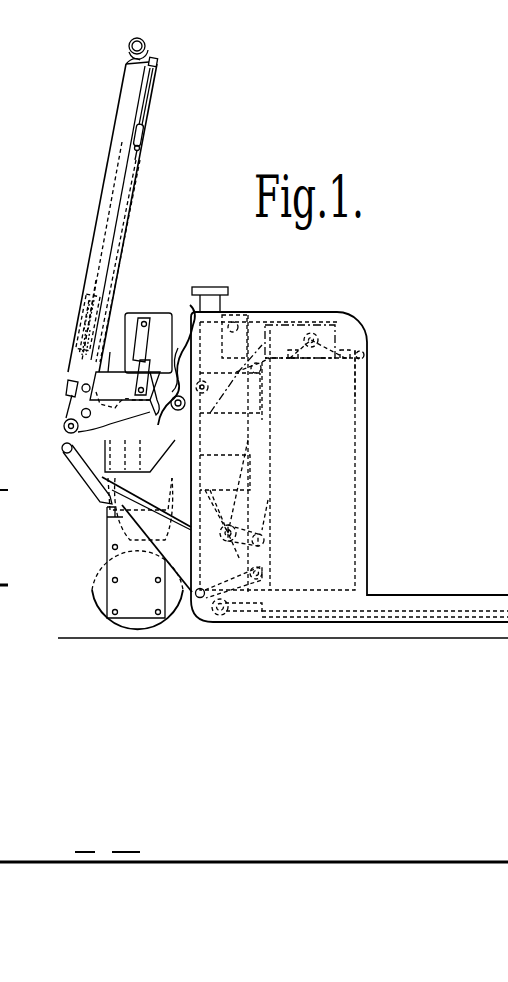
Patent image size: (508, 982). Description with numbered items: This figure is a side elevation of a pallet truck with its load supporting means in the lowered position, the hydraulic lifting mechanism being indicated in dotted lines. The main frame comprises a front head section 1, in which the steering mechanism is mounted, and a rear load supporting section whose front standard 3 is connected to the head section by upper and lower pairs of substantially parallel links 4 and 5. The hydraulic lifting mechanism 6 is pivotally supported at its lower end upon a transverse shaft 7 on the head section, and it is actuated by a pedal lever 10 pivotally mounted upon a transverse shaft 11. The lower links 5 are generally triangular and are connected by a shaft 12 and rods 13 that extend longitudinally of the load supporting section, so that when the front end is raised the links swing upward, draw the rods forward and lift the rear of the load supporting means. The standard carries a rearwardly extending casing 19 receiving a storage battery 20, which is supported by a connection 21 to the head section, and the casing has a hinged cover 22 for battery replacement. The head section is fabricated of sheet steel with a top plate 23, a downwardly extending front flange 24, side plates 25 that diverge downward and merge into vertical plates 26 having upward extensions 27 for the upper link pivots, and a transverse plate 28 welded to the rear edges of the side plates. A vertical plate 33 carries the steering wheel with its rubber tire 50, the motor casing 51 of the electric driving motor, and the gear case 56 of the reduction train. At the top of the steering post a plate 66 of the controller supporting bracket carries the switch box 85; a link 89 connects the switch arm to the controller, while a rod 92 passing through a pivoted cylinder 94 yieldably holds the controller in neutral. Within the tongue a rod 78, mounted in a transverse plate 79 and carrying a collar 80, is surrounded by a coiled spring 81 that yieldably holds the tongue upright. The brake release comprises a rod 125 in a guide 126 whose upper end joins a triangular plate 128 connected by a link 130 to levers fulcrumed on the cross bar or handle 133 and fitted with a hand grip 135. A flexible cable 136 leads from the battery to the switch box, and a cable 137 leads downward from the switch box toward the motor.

The front head section 1 is at (105, 446).
The front standard 3 is at (190, 305).
The upper pair of links 4 is at (228, 378).
The lower pair of links 5 is at (266, 590).
The hydraulic lifting mechanism 6 is at (262, 458).
The transverse shaft 7 is at (243, 515).
The pedal lever 10 is at (86, 478).
The transverse shaft 11 is at (268, 524).
The shaft 12 is at (221, 616).
The rods 13 is at (340, 614).
The casing 19 is at (347, 428).
The storage battery 20 is at (340, 400).
The connection 21 is at (365, 356).
The hinged cover 22 is at (312, 318).
The top plate 23 is at (78, 432).
The front flange 24 is at (66, 452).
The side plates 25 is at (145, 530).
The vertical plates 26 is at (272, 546).
The upward extensions 27 is at (265, 390).
The transverse plate 28 is at (182, 446).
The plate 33 is at (95, 578).
The rubber tire 50 is at (134, 631).
The motor casing 51 is at (108, 508).
The gear case 56 is at (115, 598).
The plate 66 is at (78, 420).
The rod 78 is at (85, 278).
The transverse plate 79 is at (82, 302).
The collar 80 is at (68, 386).
The coiled spring 81 is at (82, 322).
The switch box 85 is at (150, 314).
The link 89 is at (232, 320).
The rod 92 is at (143, 320).
The cylinder 94 is at (150, 346).
The rod 125 is at (120, 240).
The guide 126 is at (135, 198).
The triangular plate 128 is at (140, 143).
The link 130 is at (150, 108).
The cross bar or handle 133 is at (146, 44).
The hand grip 135 is at (126, 58).
The flexible cable 136 is at (198, 313).
The cable 137 is at (175, 365).